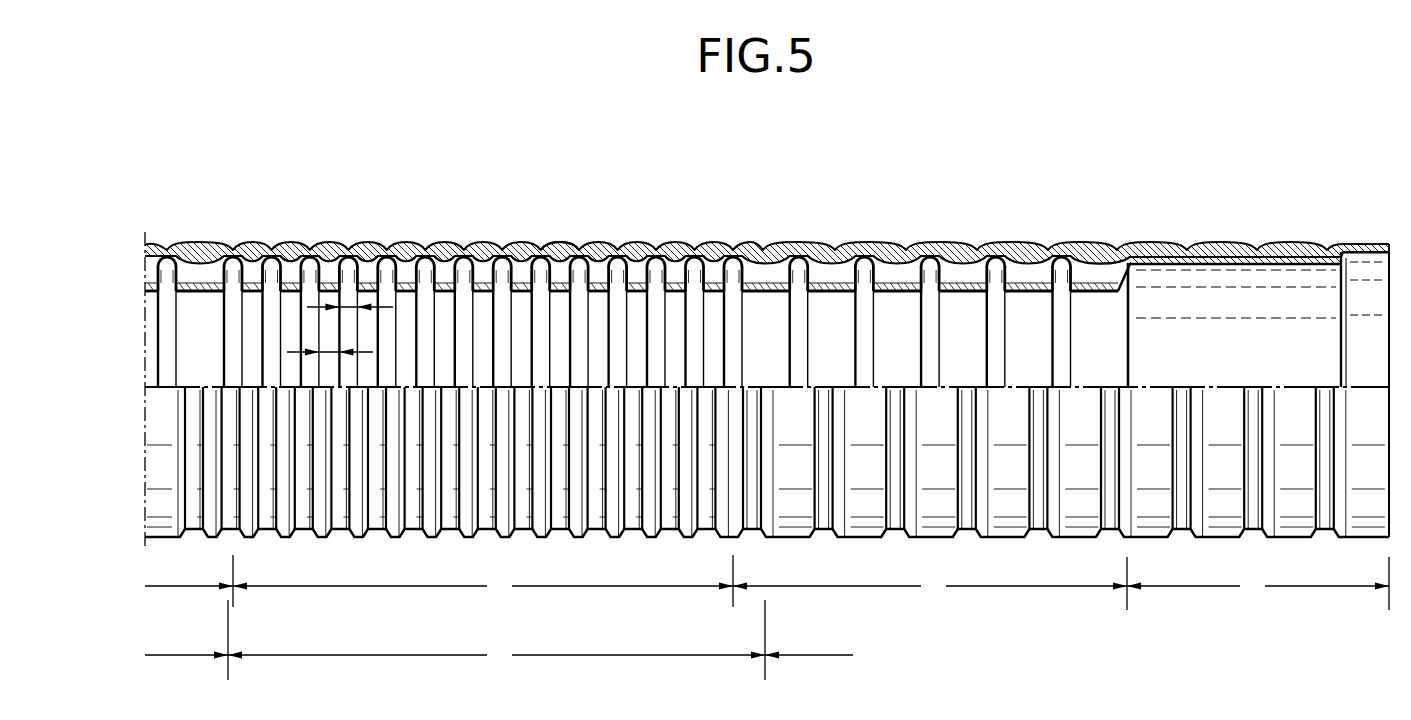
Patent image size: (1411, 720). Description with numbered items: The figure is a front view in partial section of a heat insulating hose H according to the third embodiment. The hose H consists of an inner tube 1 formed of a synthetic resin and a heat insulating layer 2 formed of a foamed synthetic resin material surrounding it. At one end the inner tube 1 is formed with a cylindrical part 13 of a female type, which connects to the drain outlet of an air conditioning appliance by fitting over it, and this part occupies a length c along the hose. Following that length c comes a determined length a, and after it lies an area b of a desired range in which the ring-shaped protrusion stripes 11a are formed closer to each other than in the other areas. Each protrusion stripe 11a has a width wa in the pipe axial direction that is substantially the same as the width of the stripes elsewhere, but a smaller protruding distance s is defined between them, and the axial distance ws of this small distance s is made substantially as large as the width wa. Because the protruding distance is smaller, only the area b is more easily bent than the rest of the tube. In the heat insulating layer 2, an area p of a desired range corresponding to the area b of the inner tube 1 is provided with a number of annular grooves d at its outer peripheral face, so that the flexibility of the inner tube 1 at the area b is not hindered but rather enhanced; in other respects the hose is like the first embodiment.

The heat insulating hose H is at (1295, 239).
The inner tube 1 is at (1100, 282).
The heat insulating layer 2 is at (1156, 250).
The cylindrical part of a female type 13 is at (1219, 275).
The ring-shaped protrusion stripes 11a is at (432, 252).
The protruding distance s is at (446, 262).
The annular grooves d is at (579, 250).
The distance of the small distance in the pipe axial direction ws is at (330, 352).
The width of the ring-shaped protrusion stripe wa is at (348, 307).
The determined length a is at (930, 583).
The area b is at (439, 581).
The length of the cylindrical part c is at (1258, 583).
The area p is at (499, 640).